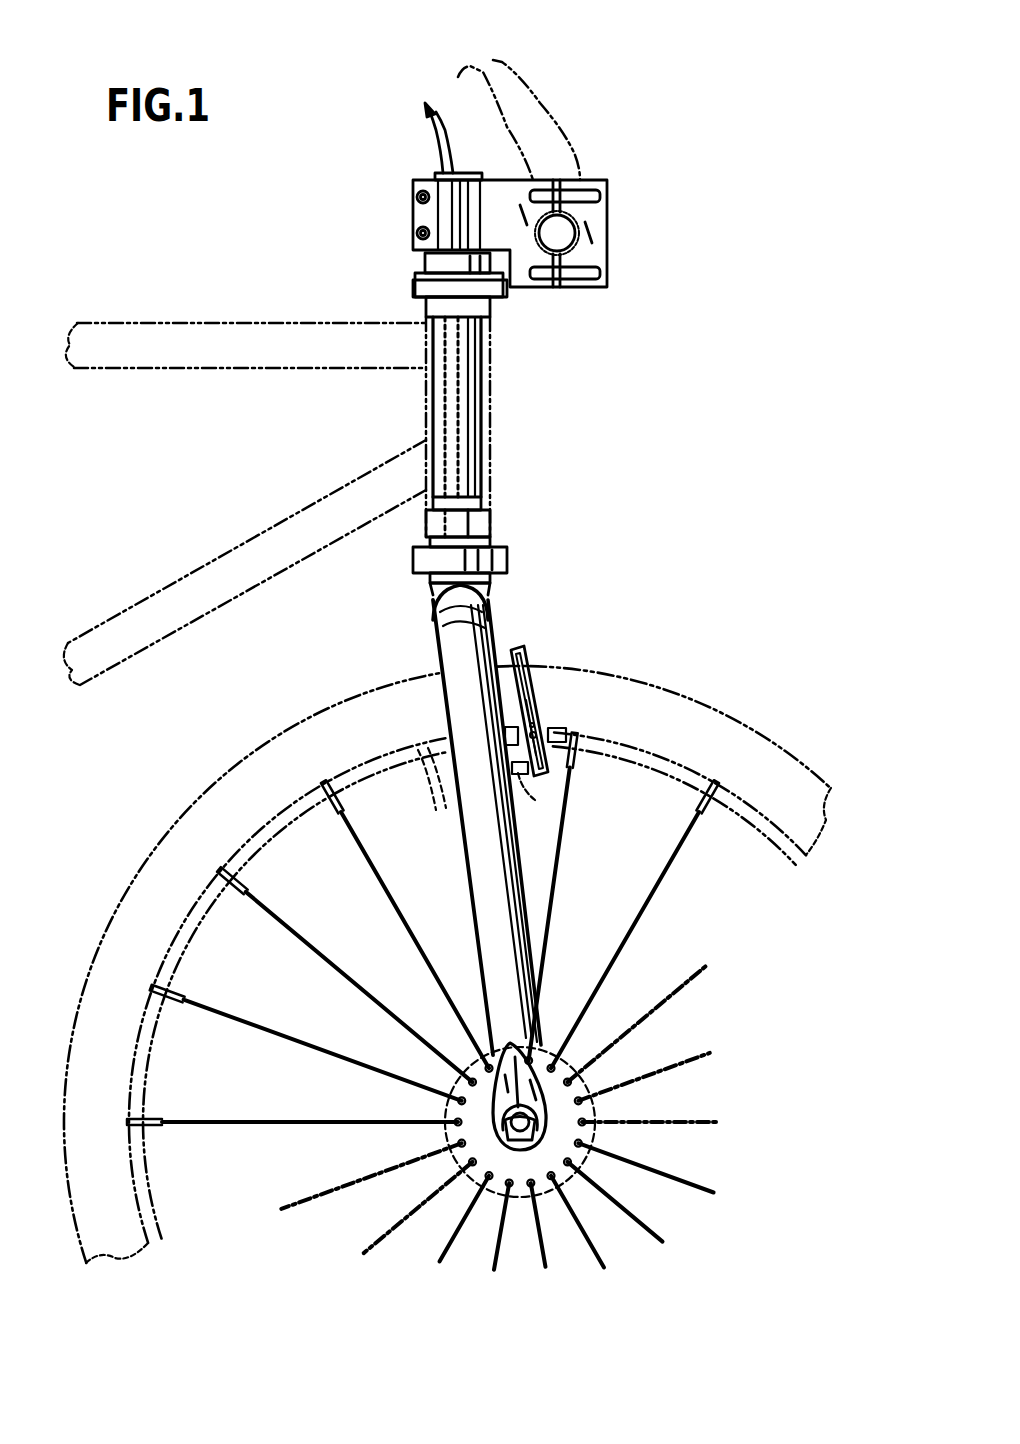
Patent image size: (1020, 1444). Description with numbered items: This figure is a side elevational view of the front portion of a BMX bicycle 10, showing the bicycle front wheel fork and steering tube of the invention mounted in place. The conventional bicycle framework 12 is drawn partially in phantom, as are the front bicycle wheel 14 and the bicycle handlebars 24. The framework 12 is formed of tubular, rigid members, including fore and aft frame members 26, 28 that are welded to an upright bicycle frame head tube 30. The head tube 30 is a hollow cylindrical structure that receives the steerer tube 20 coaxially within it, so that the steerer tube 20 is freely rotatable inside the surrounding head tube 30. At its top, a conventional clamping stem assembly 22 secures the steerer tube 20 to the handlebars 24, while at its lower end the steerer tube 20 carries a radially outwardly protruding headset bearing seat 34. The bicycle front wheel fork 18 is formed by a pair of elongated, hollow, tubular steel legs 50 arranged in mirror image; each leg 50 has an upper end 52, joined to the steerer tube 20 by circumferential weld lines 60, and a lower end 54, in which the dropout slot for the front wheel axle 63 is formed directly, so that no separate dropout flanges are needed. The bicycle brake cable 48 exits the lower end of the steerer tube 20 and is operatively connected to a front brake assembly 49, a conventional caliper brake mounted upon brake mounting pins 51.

The BMX bicycle 10 is at (795, 322).
The bicycle framework 12 is at (266, 305).
The front bicycle wheel 14 is at (752, 696).
The bicycle front wheel fork 18 is at (505, 635).
The steerer tube 20 is at (500, 460).
The clamping stem assembly 22 is at (635, 232).
The bicycle handlebars 24 is at (545, 78).
The fore frame member 26 is at (162, 352).
The aft frame member 28 is at (234, 553).
The bicycle frame head tube 30 is at (510, 410).
The headset bearing seat 34 is at (490, 578).
The bicycle brake cable 48 is at (421, 150).
The front brake assembly 49 is at (553, 695).
The tubular fork legs 50 is at (455, 850).
The brake mounting pins 51 is at (520, 782).
The fork leg upper end 52 is at (433, 643).
The fork leg lower end 54 is at (497, 1023).
The weld lines 60 is at (432, 586).
The front wheel axle 63 is at (510, 1133).